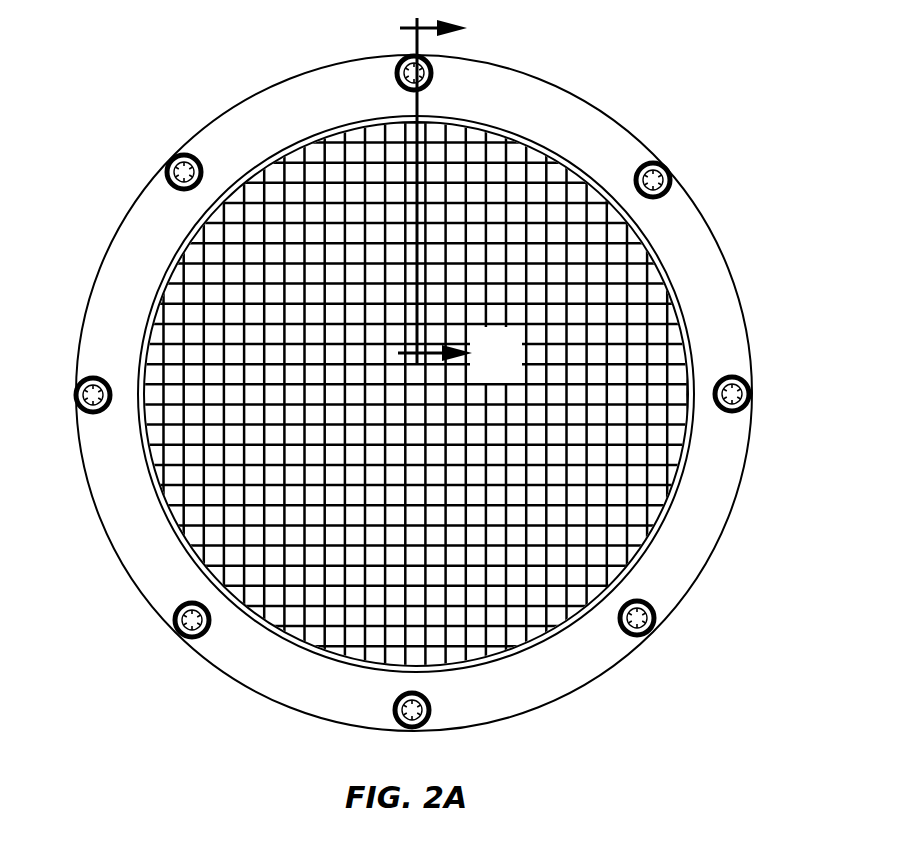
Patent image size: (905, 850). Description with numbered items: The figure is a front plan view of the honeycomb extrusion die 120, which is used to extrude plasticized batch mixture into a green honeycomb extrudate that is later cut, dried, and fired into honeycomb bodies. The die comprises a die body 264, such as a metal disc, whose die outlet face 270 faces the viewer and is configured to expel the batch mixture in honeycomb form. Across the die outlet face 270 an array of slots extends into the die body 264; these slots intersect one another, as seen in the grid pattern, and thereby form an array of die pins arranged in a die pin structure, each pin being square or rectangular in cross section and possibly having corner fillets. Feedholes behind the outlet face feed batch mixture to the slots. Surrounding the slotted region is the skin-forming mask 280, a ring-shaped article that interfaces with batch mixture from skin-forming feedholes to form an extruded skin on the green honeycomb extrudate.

The honeycomb extrusion die 120 is at (186, 122).
The die body 264 is at (702, 593).
The skin-forming mask 280 is at (143, 187).
The die outlet face 270 is at (672, 510).